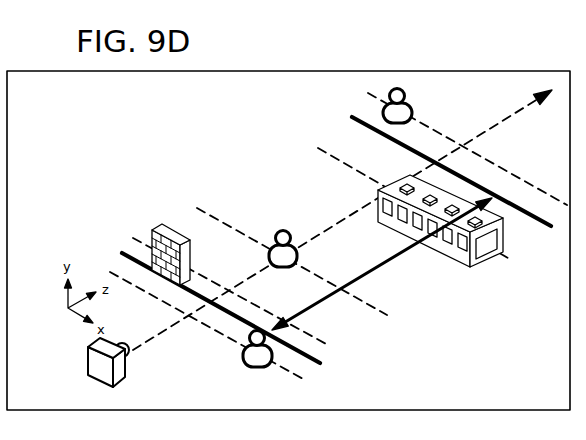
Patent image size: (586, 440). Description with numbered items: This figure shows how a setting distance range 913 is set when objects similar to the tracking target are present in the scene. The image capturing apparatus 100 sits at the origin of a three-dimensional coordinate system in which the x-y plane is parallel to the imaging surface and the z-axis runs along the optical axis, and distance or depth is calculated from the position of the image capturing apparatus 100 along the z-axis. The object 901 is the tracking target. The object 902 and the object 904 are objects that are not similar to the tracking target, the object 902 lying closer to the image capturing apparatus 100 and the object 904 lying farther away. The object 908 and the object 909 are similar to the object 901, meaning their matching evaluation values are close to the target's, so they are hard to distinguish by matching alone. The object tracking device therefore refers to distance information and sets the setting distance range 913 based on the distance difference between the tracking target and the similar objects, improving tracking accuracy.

The image capturing apparatus 100 is at (88, 352).
The object (tracking target) 901 is at (297, 256).
The object 902 is at (160, 224).
The object 904 is at (503, 235).
The object (similar object) 908 is at (412, 110).
The object (similar object) 909 is at (260, 367).
The setting distance range 913 is at (371, 272).